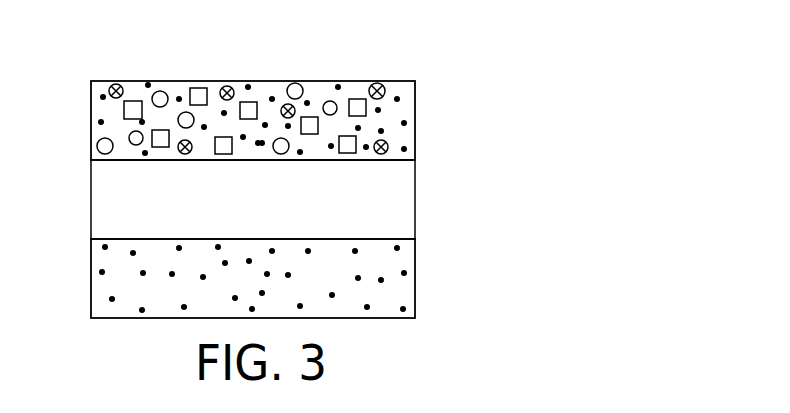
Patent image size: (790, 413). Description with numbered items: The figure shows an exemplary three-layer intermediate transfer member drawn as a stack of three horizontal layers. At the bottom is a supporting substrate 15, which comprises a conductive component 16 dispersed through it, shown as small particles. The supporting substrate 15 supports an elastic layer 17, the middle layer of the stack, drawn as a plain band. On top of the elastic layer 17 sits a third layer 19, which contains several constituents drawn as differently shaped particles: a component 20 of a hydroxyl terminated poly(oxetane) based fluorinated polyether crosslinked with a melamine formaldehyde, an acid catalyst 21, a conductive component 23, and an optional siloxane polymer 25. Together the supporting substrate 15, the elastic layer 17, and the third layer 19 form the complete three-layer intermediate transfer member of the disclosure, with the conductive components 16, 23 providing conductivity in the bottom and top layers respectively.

The supporting substrate 15 is at (415, 281).
The conductive component 16 is at (143, 273).
The elastic layer 17 is at (415, 203).
The third layer 19 is at (415, 111).
The component 20 is at (133, 109).
The acid catalyst 21 is at (183, 152).
The conductive component 23 is at (383, 131).
The siloxane polymer 25 is at (136, 138).